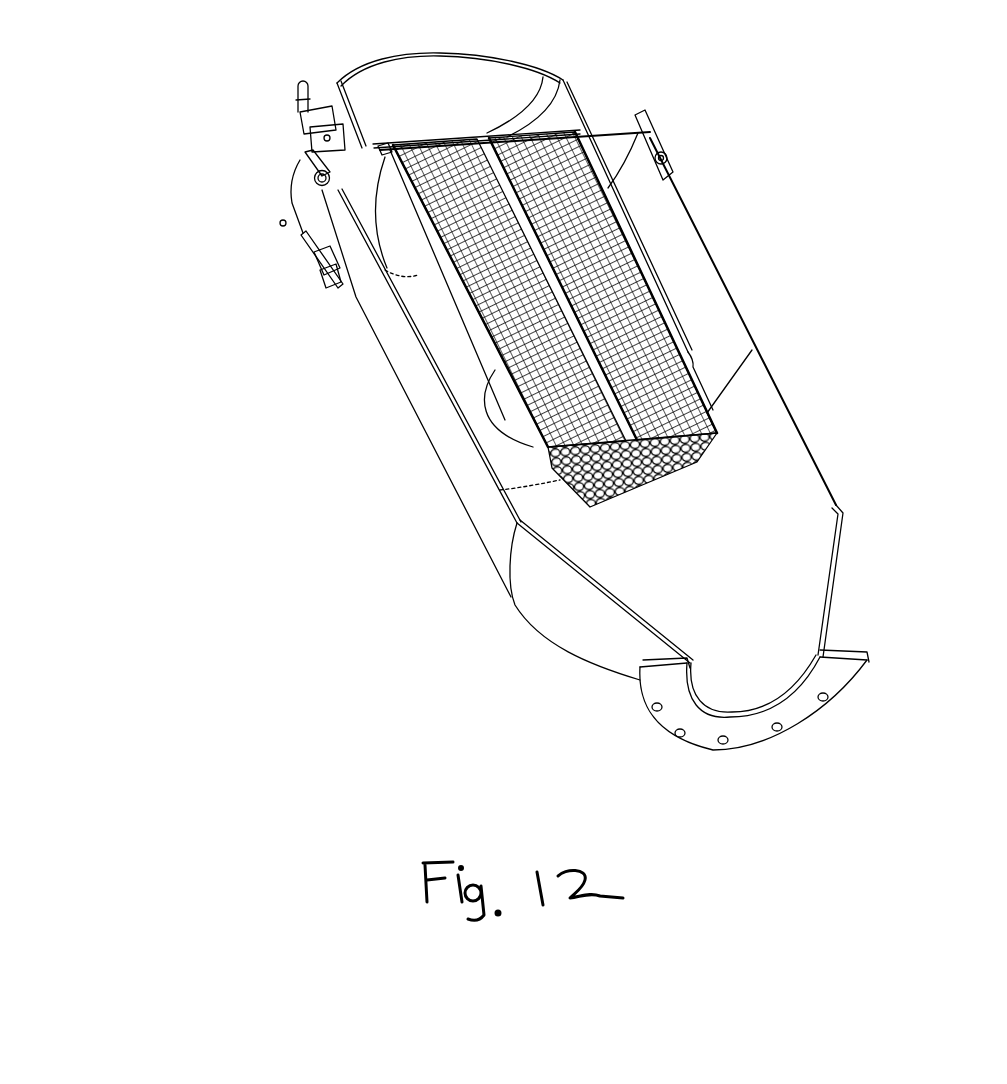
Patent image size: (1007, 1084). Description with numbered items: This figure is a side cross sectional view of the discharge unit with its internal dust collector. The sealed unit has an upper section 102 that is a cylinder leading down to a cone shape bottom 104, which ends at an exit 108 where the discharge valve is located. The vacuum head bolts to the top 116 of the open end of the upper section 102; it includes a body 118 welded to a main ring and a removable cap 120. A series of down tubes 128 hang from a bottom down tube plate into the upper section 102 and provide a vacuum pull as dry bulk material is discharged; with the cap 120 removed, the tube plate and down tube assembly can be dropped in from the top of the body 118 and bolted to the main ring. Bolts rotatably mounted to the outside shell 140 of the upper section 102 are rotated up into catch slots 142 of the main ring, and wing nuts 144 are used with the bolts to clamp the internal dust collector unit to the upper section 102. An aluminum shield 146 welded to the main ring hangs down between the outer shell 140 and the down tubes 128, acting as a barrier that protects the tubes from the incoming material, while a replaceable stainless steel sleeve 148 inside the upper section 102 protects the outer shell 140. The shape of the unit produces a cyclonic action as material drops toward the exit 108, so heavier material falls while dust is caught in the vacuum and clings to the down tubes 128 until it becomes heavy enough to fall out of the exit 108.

The upper section 102 is at (767, 277).
The cone shape bottom 104 is at (865, 595).
The exit 108 is at (830, 653).
The top 116 is at (303, 145).
The body 118 is at (577, 104).
The cap 120 is at (498, 60).
The down tubes 128 is at (703, 457).
The outside shell 140 is at (750, 402).
The catch slots 142 is at (350, 165).
The wing nuts 144 is at (295, 84).
The shield 146 is at (670, 300).
The sleeve 148 is at (727, 377).